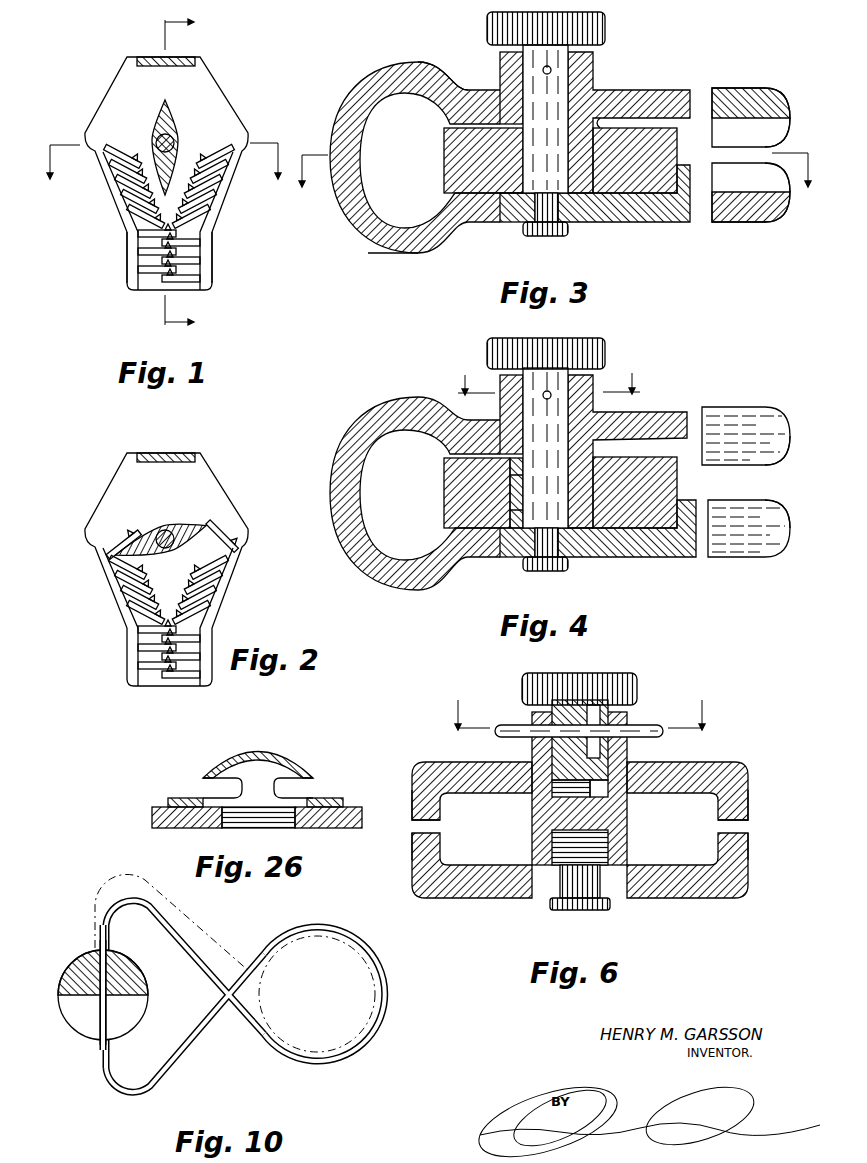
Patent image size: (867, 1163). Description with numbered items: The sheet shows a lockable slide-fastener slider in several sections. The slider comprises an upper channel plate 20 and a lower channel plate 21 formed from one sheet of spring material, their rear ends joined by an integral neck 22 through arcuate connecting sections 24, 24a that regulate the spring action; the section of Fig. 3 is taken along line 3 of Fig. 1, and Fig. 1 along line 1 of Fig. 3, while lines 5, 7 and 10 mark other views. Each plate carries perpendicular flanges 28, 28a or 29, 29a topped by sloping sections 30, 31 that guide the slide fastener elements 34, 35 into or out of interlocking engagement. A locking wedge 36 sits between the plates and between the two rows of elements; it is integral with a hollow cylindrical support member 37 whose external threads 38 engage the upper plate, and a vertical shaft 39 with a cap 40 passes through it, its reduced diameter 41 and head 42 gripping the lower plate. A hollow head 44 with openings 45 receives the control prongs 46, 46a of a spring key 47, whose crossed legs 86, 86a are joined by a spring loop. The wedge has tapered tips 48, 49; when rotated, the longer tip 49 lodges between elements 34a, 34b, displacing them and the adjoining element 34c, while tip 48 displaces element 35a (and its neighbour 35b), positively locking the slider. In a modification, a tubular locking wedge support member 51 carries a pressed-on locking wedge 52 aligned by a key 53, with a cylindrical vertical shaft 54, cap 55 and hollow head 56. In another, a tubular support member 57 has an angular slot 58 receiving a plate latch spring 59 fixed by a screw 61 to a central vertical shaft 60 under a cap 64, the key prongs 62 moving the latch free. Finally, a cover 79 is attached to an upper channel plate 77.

In FIG. 3, the section line 1— 1 is at (557, 180).
In FIG. 1, the section line 3— 3 is at (185, 173).
In FIG. 1, the section line 5— 5 is at (162, 169).
In FIG. 6, the section line 7— 7 is at (577, 705).
In FIG. 4, the section line 10— 10 is at (545, 374).
In FIG. 3, the upper channel plate 20 is at (722, 88).
In FIG. 4, the upper channel plate 20 is at (708, 408).
In FIG. 6, the upper channel plate 20 is at (692, 762).
In FIG. 1, the lower channel plate 21 is at (212, 84).
In FIG. 2, the lower channel plate 21 is at (222, 488).
In FIG. 3, the lower channel plate 21 is at (722, 224).
In FIG. 4, the lower channel plate 21 is at (722, 560).
In FIG. 6, the lower channel plate 21 is at (668, 898).
In FIG. 1, the neck 22 is at (163, 55).
In FIG. 3, the neck 22 is at (330, 142).
In FIG. 3, the connecting section 24 is at (398, 62).
In FIG. 3, the connecting section 24a is at (393, 256).
In FIG. 3, the flange 28 is at (782, 130).
In FIG. 4, the flange 28 is at (788, 448).
In FIG. 6, the flange 28 is at (750, 800).
In FIG. 6, the flange 28a is at (411, 808).
In FIG. 1, the flange 29 is at (212, 258).
In FIG. 3, the flange 29 is at (778, 213).
In FIG. 4, the flange 29 is at (793, 505).
In FIG. 6, the flange 29 is at (750, 846).
In FIG. 1, the flange 29a is at (127, 258).
In FIG. 6, the flange 29a is at (411, 847).
In FIG. 1, the sloping section 30 is at (113, 208).
In FIG. 1, the sloping section 31 is at (223, 205).
In FIG. 1, the slide fastener elements 34 is at (148, 268).
In FIG. 2, the slide fastener element 34a is at (115, 556).
In FIG. 2, the slide fastener element 34b is at (118, 574).
In FIG. 2, the slide fastener element 34c is at (127, 590).
In FIG. 1, the slide fastener elements 35 is at (192, 278).
In FIG. 2, the slide fastener element 35a is at (225, 530).
In FIG. 2, the right tooth 35b is at (218, 556).
In FIG. 1, the locking wedge 36 is at (176, 140).
In FIG. 3, the locking wedge 36 is at (444, 155).
In FIG. 3, the hollow cylindrical support member 37 is at (597, 70).
In FIG. 3, the external threads 38 is at (600, 112).
In FIG. 3, the vertical shaft 39 is at (570, 224).
In FIG. 3, the cap 40 is at (487, 27).
In FIG. 3, the reduced diameter 41 is at (527, 208).
In FIG. 3, the head 42 is at (546, 237).
In FIG. 3, the hollow head 44 is at (597, 60).
In FIG. 3, the opening 45 is at (543, 70).
In FIG. 10, the control prong 46 is at (97, 910).
In FIG. 10, the prong 46a is at (100, 1048).
In FIG. 10, the key 47 is at (330, 928).
In FIG. 1, the tapered tip 48 is at (160, 112).
In FIG. 2, the tapered tip 48 is at (180, 525).
In FIG. 1, the tapered tip 49 is at (127, 193).
In FIG. 2, the tapered tip 49 is at (148, 540).
In FIG. 4, the tubular locking wedge support member 51 is at (600, 406).
In FIG. 4, the locking wedge 52 is at (443, 494).
In FIG. 4, the key 53 is at (500, 500).
In FIG. 4, the cylindrical vertical shaft 54 is at (588, 552).
In FIG. 4, the cap 55 is at (487, 344).
In FIG. 4, the hollow head 56 is at (597, 372).
In FIG. 10, the hollow head 56 is at (70, 972).
In FIG. 6, the tubular locking wedge support member 57 is at (628, 748).
In FIG. 6, the angular slot 58 is at (606, 722).
In FIG. 6, the plate latch spring 59 is at (592, 705).
In FIG. 6, the central vertical shaft 60 is at (607, 845).
In FIG. 6, the screw 61 is at (607, 800).
In FIG. 6, the pin 62 is at (645, 724).
In FIG. 6, the cap 64 is at (524, 680).
In FIG. 26, the upper channel plate 77 is at (152, 814).
In FIG. 26, the cover 79 is at (272, 738).
In FIG. 10, the leg 86 is at (200, 1044).
In FIG. 10, the leg 86a is at (205, 918).